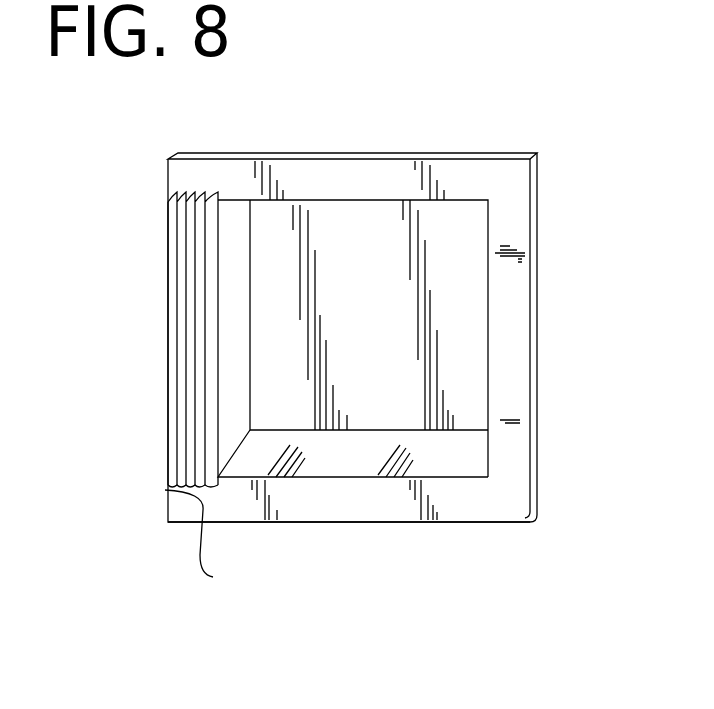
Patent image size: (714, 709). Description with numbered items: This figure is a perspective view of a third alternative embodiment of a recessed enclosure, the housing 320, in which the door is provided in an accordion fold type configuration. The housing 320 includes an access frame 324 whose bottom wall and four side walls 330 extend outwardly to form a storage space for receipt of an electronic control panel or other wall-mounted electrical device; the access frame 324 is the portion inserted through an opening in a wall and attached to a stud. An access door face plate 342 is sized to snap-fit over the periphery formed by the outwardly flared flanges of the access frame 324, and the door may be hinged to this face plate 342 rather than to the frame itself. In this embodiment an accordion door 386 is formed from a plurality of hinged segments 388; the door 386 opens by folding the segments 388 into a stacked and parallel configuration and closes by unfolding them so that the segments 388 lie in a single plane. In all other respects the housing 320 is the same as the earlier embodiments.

The housing 320 is at (447, 110).
The access frame 324 is at (470, 305).
The side wall 330 is at (342, 457).
The access door face plate 342 is at (483, 505).
The accordion door 386 is at (162, 486).
The hinged segments 388 is at (219, 538).